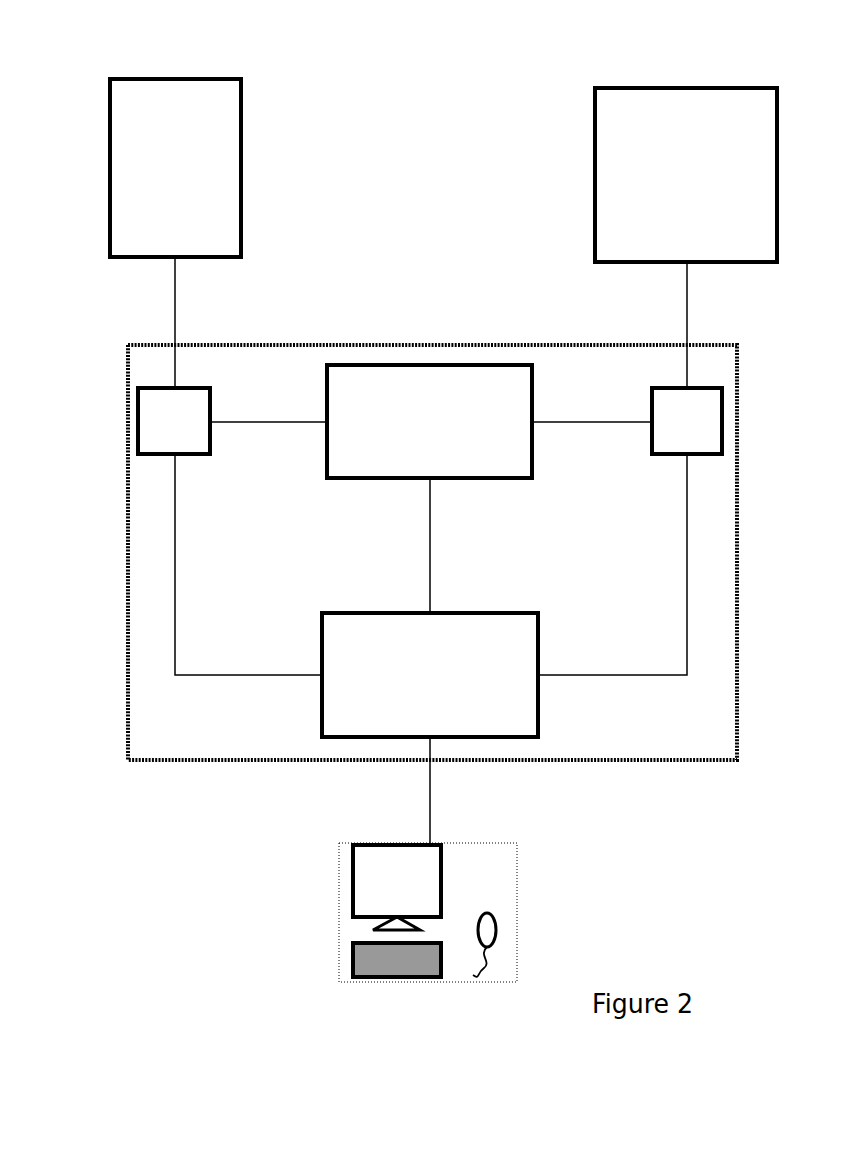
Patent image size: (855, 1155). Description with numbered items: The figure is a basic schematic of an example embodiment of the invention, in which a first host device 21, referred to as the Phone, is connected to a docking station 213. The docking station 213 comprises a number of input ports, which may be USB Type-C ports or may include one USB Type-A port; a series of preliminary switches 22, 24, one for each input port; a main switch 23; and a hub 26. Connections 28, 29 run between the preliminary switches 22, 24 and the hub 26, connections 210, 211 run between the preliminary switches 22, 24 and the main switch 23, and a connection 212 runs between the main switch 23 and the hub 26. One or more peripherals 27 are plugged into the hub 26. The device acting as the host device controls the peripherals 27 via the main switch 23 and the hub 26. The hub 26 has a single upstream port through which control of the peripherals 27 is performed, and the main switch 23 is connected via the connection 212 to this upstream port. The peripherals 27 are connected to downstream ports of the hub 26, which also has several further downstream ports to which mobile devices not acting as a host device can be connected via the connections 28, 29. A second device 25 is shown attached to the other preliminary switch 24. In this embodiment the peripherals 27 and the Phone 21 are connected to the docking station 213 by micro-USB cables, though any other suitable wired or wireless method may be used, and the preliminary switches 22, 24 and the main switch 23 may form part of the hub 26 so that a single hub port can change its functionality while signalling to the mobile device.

The first host device 21 is at (241, 166).
The preliminary switch 22 is at (138, 417).
The main switch 23 is at (430, 365).
The preliminary switch 24 is at (722, 419).
The second device 25 is at (595, 172).
The hub 26 is at (427, 737).
The peripherals 27 is at (517, 912).
The connection 28 is at (200, 675).
The connection 29 is at (687, 648).
The connection 210 is at (250, 422).
The connection 211 is at (578, 422).
The connection 212 is at (430, 553).
The docking station 213 is at (737, 553).